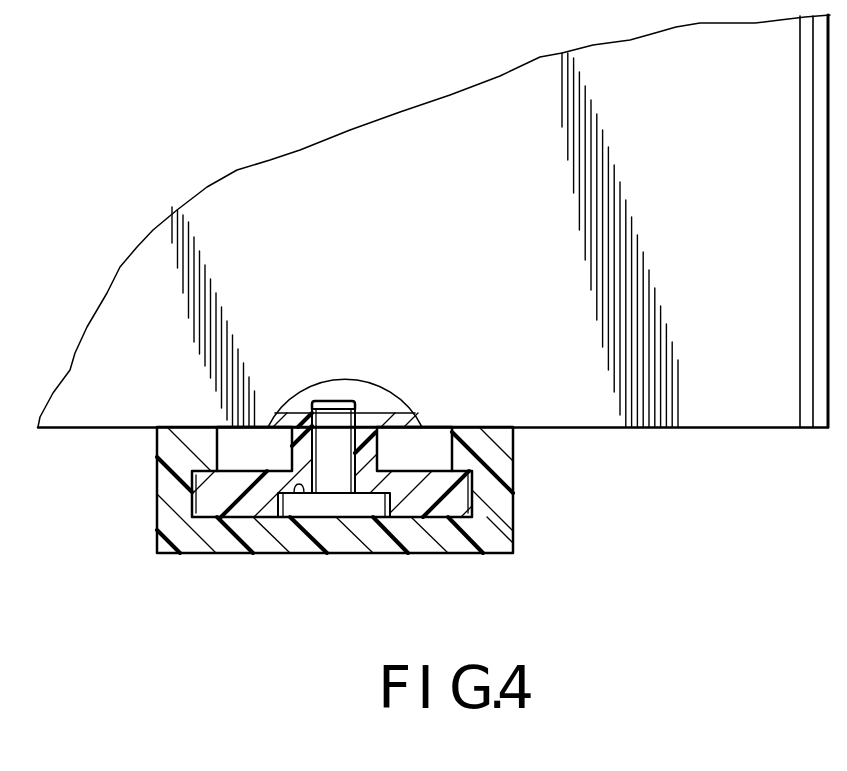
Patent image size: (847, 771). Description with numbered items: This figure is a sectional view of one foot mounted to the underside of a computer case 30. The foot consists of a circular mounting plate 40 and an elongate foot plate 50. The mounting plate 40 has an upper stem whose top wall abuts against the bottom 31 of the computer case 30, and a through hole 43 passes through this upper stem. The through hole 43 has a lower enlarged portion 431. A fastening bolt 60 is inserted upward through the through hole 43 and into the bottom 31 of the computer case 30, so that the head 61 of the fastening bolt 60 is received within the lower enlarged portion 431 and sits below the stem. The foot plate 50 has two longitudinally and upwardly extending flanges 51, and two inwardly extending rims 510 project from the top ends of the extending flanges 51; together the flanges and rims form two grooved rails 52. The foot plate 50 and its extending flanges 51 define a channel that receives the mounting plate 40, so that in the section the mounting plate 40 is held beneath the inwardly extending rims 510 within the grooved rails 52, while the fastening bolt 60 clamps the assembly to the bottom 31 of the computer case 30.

The computer case 30 is at (718, 438).
The bottom of the computer case 31 is at (603, 421).
The mounting plate 40 is at (428, 456).
The through hole 43 is at (299, 490).
The lower enlarged portion 431 is at (391, 498).
The foot plate 50 is at (440, 566).
The extending flanges 51 is at (173, 525).
The grooved rails 52 is at (195, 503).
The inwardly extending rims 510 is at (208, 448).
The fastening bolt 60 is at (347, 389).
The head of the fastening bolt 61 is at (331, 508).